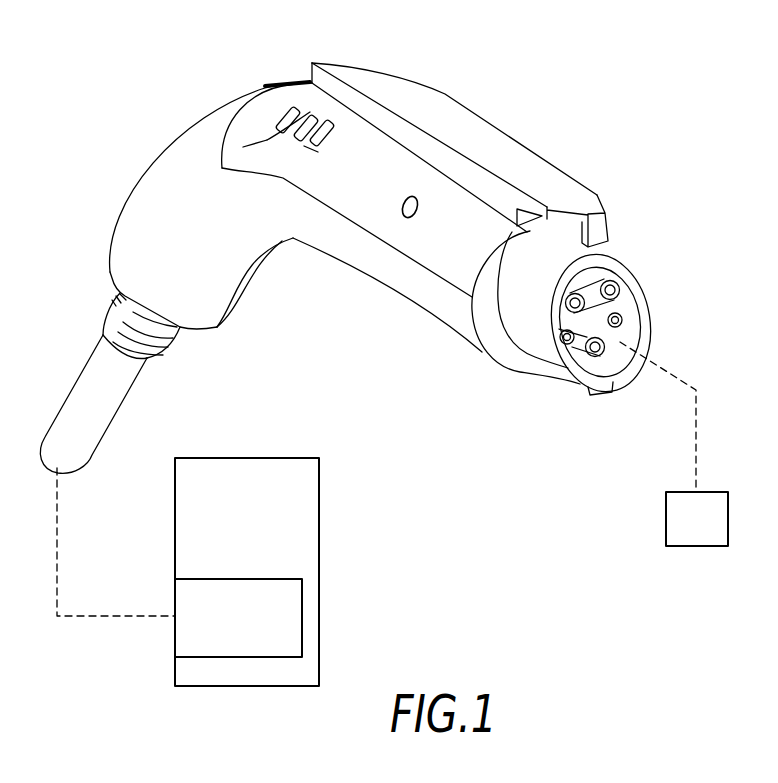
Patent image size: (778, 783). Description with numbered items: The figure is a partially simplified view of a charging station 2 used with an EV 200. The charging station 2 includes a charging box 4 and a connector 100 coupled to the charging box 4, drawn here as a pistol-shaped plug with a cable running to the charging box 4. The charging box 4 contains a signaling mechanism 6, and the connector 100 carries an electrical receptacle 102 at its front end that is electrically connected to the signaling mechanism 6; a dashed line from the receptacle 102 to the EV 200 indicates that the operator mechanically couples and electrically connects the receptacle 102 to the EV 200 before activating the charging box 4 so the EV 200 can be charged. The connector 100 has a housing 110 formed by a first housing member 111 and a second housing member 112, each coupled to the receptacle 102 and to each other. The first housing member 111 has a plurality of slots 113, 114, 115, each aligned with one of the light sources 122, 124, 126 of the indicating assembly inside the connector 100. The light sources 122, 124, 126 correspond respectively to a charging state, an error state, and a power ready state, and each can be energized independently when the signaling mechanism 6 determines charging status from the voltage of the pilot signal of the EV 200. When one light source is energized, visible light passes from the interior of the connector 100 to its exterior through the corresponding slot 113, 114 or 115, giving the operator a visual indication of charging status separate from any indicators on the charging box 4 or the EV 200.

The charging station 2 is at (112, 140).
The charging box 4 is at (320, 536).
The signaling mechanism 6 is at (182, 592).
The connector 100 is at (522, 127).
The electrical receptacle 102 is at (626, 302).
The housing 110 is at (434, 256).
The first housing member 111 is at (352, 204).
The second housing member 112 is at (232, 296).
The slot 113 is at (243, 147).
The slot 114 is at (287, 127).
The slot 115 is at (315, 141).
The light source 122 is at (274, 104).
The light source 124 is at (308, 104).
The light source 126 is at (348, 117).
The EV 200 is at (667, 517).